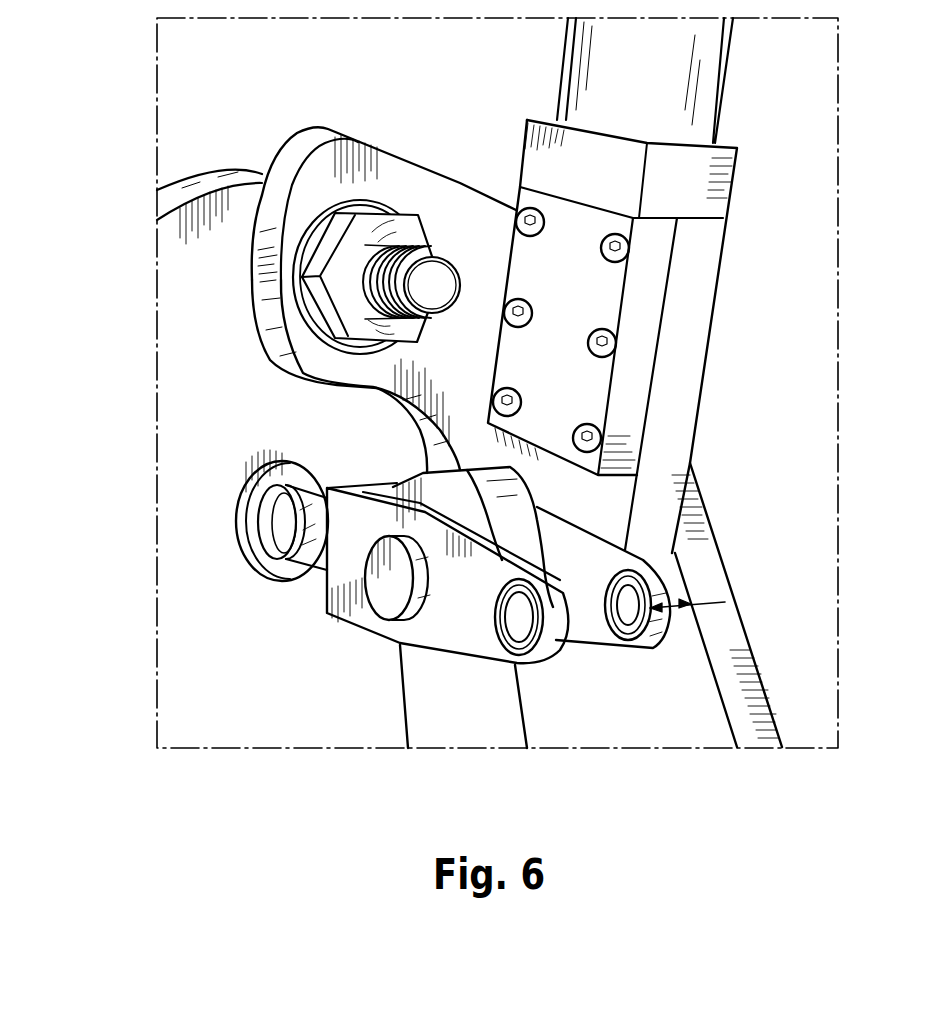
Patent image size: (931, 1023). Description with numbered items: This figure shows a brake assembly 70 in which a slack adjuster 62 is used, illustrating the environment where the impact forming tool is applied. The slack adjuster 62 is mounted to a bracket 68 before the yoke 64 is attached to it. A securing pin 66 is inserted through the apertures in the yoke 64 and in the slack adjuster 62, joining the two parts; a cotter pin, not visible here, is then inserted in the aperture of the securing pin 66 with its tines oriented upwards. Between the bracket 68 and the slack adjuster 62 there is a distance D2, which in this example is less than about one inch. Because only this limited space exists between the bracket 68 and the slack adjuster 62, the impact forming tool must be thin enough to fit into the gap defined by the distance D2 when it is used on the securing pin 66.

The brake assembly 70 is at (100, 417).
The slack adjuster 62 is at (425, 715).
The yoke 64 is at (472, 637).
The securing pin 66 is at (388, 600).
The bracket 68 is at (706, 726).
The distance between the bracket and the slack adjuster D2 is at (652, 606).